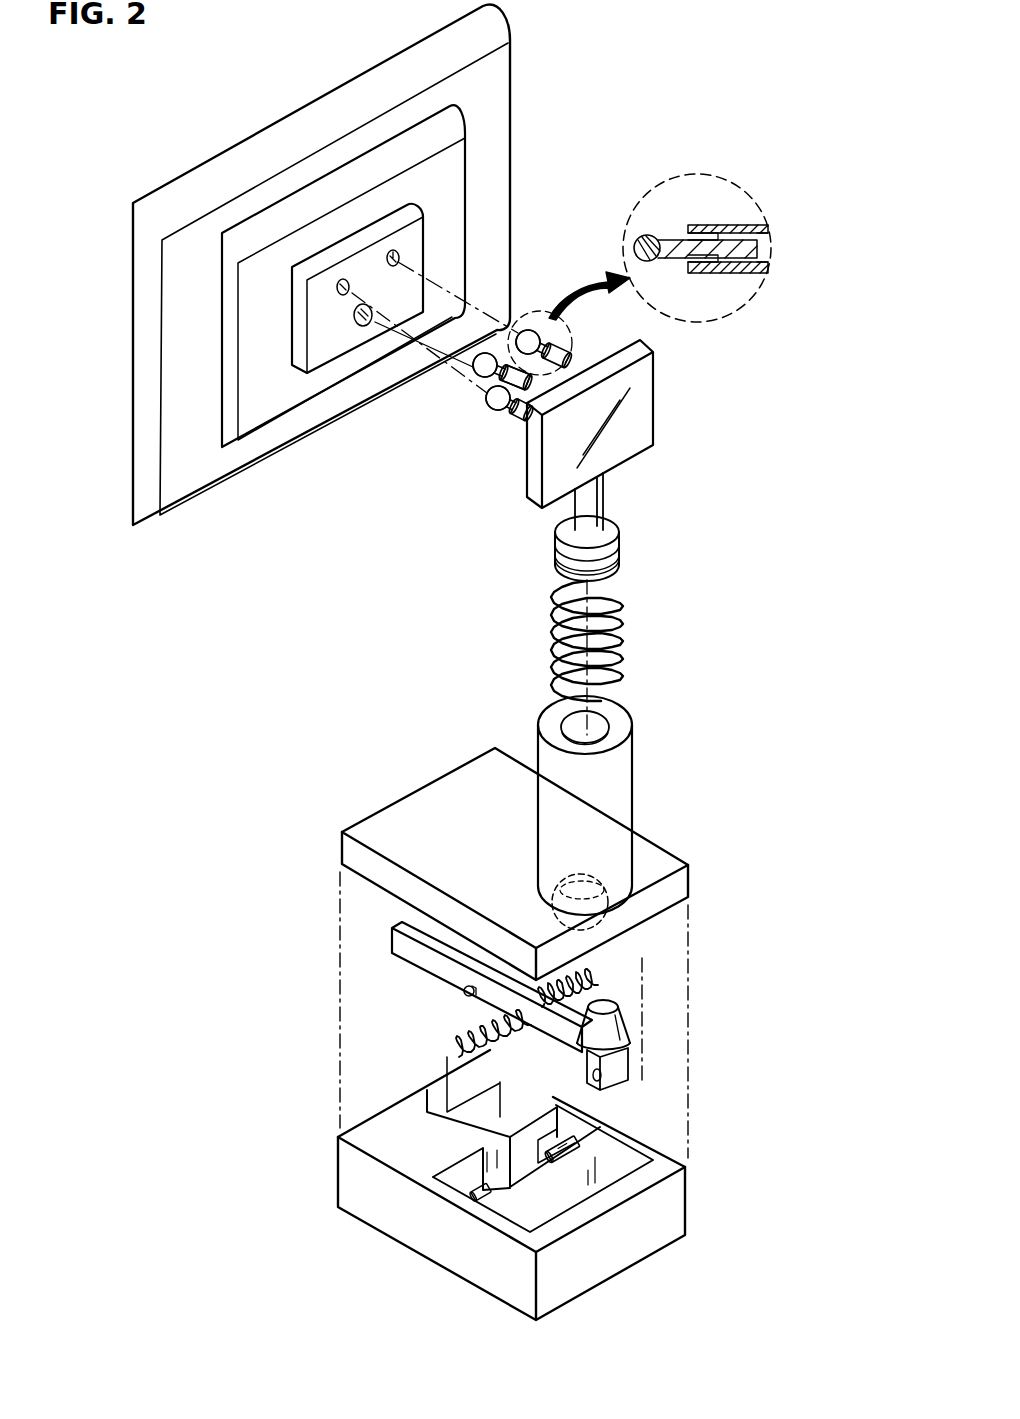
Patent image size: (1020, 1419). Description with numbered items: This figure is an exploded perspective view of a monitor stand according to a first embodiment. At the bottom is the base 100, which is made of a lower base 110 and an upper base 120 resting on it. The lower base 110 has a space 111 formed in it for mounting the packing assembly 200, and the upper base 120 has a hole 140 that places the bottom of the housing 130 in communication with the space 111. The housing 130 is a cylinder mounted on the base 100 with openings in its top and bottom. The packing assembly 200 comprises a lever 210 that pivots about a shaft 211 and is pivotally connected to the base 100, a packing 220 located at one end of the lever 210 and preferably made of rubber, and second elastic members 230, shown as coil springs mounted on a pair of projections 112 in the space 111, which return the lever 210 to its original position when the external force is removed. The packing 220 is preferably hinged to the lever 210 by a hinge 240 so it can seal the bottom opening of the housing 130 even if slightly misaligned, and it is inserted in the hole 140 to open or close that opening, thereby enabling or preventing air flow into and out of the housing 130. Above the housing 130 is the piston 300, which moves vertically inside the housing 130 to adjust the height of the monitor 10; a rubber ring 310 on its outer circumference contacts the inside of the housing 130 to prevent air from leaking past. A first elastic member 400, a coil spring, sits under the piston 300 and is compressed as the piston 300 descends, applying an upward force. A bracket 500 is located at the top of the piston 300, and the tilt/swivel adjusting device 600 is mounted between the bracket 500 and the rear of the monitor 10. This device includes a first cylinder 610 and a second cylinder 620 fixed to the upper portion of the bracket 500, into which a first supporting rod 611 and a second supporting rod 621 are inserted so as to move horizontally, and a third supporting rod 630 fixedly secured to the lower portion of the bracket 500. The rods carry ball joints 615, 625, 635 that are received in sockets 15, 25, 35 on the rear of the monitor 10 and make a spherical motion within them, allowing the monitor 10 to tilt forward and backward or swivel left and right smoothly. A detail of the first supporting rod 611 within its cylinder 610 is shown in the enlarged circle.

The monitor 10 is at (503, 150).
The socket 15 is at (400, 259).
The socket 25 is at (344, 294).
The socket 35 is at (364, 327).
The base 100 is at (263, 847).
The lower base 110 is at (345, 1177).
The space 111 is at (542, 1190).
The projections 112 is at (580, 1142).
The upper base 120 is at (343, 848).
The housing 130 is at (632, 768).
The hole 140 is at (585, 885).
The packing assembly 200 is at (648, 1048).
The lever 210 is at (413, 957).
The shaft 211 is at (466, 993).
The packing 220 is at (610, 1003).
The second elastic member 230 is at (594, 977).
The hinge 240 is at (603, 1093).
The piston 300 is at (615, 529).
The rubber ring 310 is at (620, 557).
The first elastic member 400 is at (625, 627).
The bracket 500 is at (646, 398).
The tilt/swivel adjusting device 600 is at (650, 327).
The first cylinder 610 is at (569, 350).
The first supporting rod 611 is at (692, 225).
The ball joint 615 is at (530, 322).
The second cylinder 620 is at (490, 384).
The second supporting rod 621 is at (498, 378).
The ball joint 625 is at (476, 366).
The third supporting rod 630 is at (523, 418).
The ball joint 635 is at (500, 410).